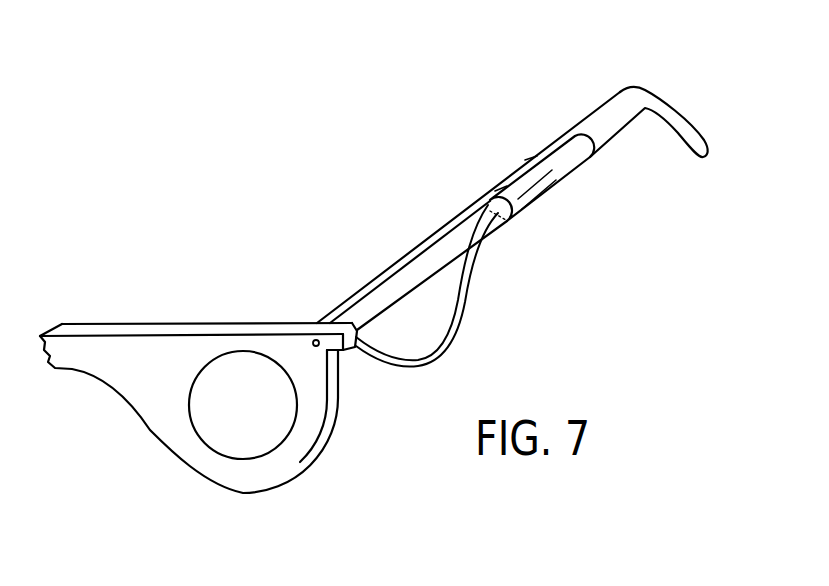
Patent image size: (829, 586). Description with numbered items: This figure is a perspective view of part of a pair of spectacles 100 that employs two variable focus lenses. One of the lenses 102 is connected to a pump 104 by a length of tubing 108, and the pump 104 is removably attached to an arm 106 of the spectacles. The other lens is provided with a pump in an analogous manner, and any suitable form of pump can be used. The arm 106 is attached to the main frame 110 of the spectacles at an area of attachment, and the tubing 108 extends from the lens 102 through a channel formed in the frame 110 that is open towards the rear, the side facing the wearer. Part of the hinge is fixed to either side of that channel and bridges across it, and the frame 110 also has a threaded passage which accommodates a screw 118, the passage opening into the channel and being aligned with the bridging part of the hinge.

The pair of spectacles 100 is at (325, 262).
The lens 102 is at (205, 427).
The pump 104 is at (560, 160).
The arm 106 is at (637, 103).
The tubing 108 is at (446, 337).
The main frame 110 is at (145, 347).
The screw 118 is at (313, 345).